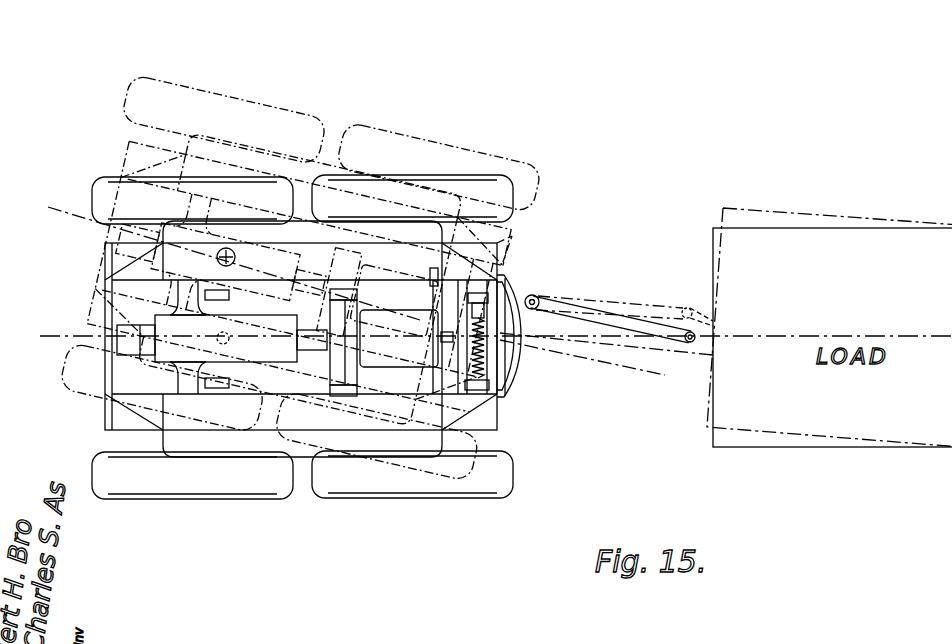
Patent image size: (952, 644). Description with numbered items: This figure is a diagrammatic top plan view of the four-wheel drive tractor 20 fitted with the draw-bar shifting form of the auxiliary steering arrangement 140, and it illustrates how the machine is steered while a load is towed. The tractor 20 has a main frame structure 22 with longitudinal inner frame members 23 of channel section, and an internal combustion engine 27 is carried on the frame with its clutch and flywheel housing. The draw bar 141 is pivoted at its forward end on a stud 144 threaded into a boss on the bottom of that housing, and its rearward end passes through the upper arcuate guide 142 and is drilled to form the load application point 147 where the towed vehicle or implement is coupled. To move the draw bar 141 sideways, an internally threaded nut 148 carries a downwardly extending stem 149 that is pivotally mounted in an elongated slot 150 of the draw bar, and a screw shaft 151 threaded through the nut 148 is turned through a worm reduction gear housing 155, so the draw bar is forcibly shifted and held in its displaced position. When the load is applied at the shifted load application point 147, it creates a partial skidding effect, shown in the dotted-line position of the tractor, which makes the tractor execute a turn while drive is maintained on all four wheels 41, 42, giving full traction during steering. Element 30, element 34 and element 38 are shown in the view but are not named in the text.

The four-wheel drive tractor 20 is at (480, 420).
The main frame structure 22 is at (235, 386).
The longitudinal inner frame members 23 is at (239, 296).
The internal combustion engine 27 is at (406, 338).
The drive shaft 30 is at (309, 342).
The spring hangers 34 is at (190, 300).
The axle housing 38 is at (173, 233).
The wheel 41 is at (193, 186).
The wheel 42 is at (537, 206).
The auxiliary steering arrangement 140 is at (516, 401).
The draw bar 141 is at (512, 290).
The upper arcuate guide 142 is at (509, 356).
The stud 144 is at (207, 338).
The load application point 147 is at (540, 299).
The internally threaded nut 148 is at (509, 327).
The stem 149 is at (512, 258).
The elongated slot 150 is at (434, 275).
The screw shaft 151 is at (582, 357).
The worm reduction gear housing 155 is at (511, 389).